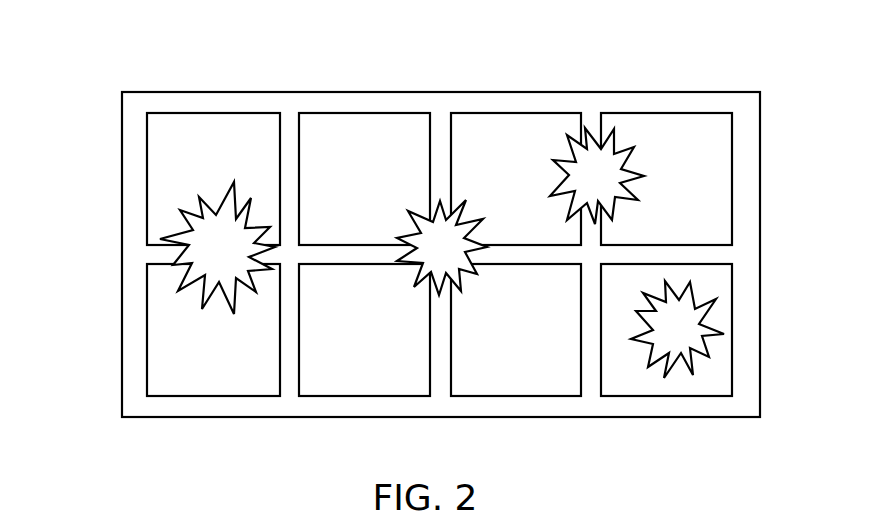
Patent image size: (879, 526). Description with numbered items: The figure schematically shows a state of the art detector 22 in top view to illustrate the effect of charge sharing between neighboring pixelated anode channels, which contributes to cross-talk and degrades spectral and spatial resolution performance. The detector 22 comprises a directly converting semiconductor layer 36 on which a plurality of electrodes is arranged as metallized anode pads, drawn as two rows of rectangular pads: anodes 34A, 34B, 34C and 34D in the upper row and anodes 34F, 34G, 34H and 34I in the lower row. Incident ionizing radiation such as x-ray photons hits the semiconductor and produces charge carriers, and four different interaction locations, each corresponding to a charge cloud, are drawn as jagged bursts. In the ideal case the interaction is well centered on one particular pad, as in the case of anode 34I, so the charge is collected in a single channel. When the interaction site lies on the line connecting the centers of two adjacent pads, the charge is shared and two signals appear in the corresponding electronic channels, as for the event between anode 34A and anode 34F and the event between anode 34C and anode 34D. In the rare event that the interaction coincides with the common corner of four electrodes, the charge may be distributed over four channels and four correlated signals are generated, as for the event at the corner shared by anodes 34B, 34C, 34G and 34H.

The detector 22 is at (418, 250).
The anode 34A is at (200, 113).
The anode 34B is at (366, 113).
The anode 34C is at (532, 113).
The anode 34D is at (688, 113).
The anode 34F is at (218, 396).
The anode 34G is at (383, 396).
The anode 34H is at (550, 396).
The anode 34I is at (707, 396).
The directly converting semiconductor layer 36 is at (758, 269).